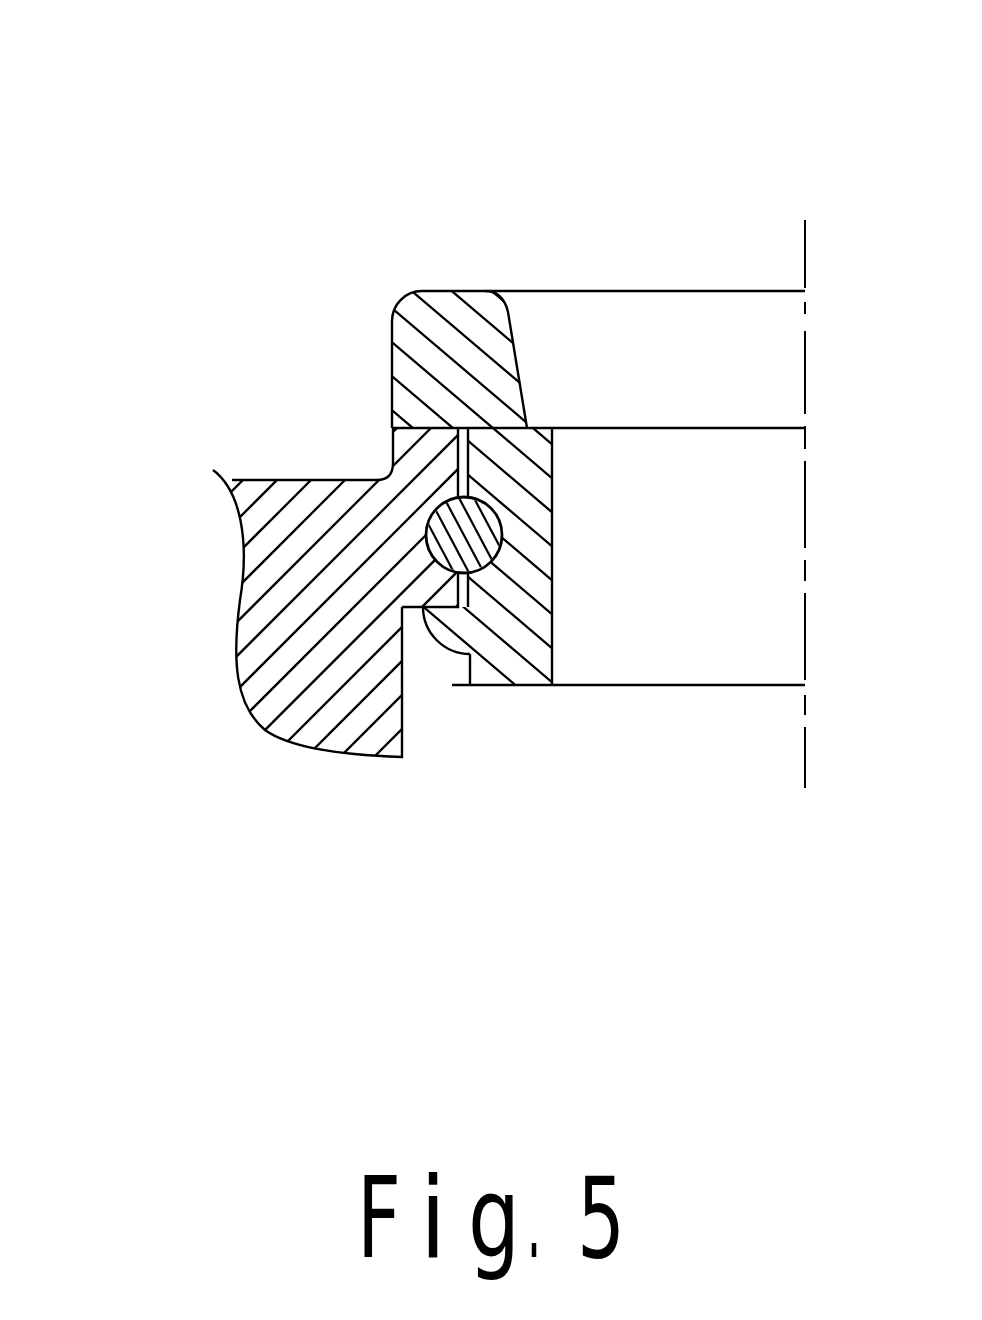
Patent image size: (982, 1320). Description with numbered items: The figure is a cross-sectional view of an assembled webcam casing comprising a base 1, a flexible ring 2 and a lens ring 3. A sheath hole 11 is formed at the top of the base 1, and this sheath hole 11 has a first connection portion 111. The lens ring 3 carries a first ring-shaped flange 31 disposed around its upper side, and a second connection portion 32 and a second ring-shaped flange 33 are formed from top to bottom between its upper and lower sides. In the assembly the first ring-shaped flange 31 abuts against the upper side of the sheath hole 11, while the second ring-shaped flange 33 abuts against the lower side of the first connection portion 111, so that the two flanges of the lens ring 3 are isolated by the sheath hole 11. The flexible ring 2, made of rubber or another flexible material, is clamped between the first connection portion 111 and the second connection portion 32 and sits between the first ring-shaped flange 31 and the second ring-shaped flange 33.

The base 1 is at (200, 707).
The sheath hole 11 is at (462, 457).
The first connection portion 111 is at (427, 520).
The flexible ring 2 is at (465, 545).
The lens ring 3 is at (692, 288).
The first ring-shaped flange 31 is at (450, 310).
The second connection portion 32 is at (503, 530).
The second ring-shaped flange 33 is at (402, 630).